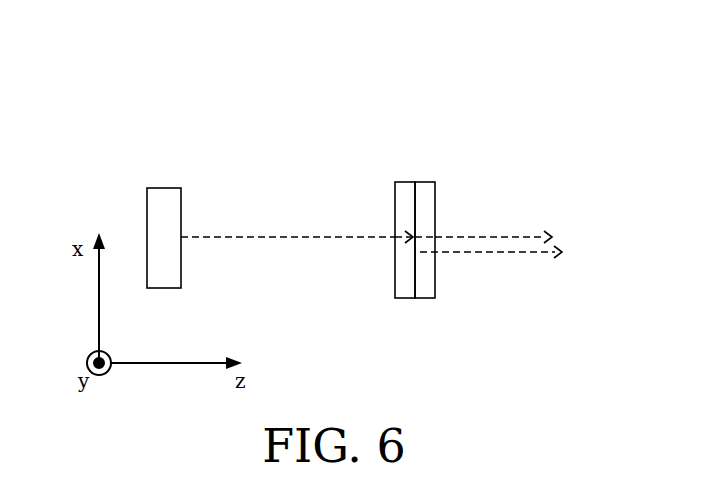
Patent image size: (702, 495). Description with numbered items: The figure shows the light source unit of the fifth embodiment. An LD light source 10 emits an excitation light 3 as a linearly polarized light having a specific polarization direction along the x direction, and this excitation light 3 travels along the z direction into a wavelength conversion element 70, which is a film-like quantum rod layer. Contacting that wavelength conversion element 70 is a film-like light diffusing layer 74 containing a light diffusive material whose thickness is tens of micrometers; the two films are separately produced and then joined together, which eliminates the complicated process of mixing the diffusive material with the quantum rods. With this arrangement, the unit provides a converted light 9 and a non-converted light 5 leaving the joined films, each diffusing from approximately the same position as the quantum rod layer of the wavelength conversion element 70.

The LD light source 10 is at (166, 188).
The excitation light 3 is at (247, 243).
The wavelength conversion element 70 is at (395, 297).
The light diffusing layer 74 is at (427, 298).
The converted light 9 is at (483, 238).
The non-converted light 5 is at (480, 253).